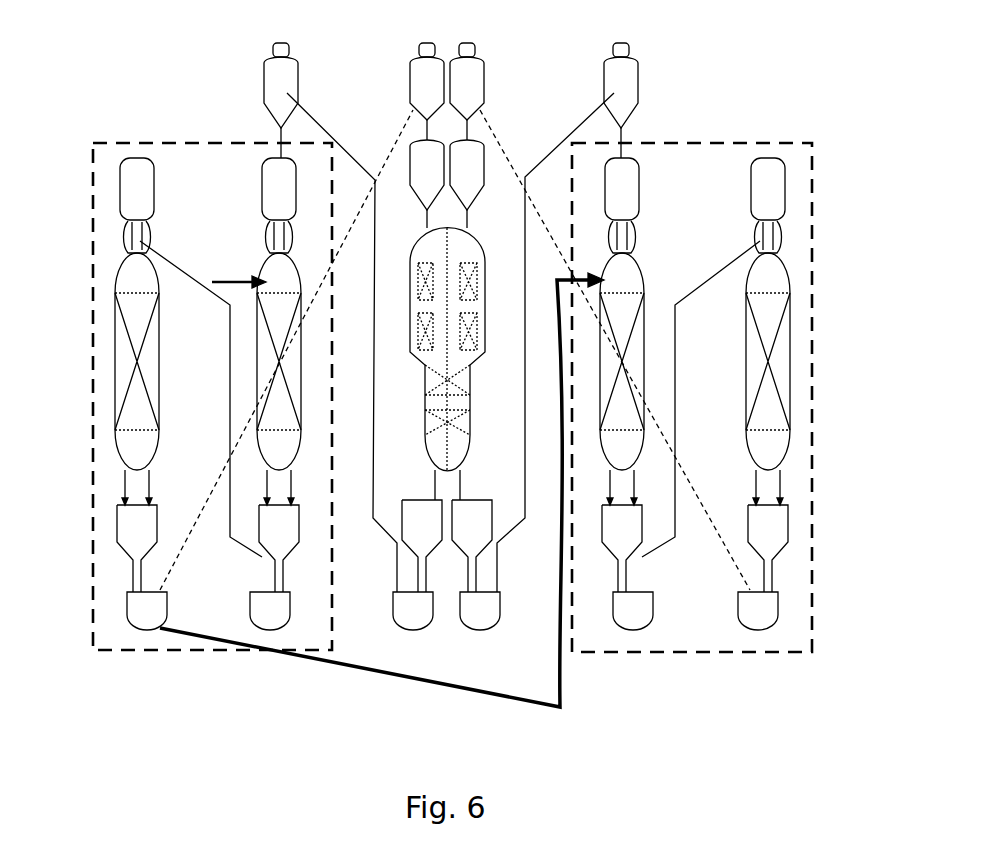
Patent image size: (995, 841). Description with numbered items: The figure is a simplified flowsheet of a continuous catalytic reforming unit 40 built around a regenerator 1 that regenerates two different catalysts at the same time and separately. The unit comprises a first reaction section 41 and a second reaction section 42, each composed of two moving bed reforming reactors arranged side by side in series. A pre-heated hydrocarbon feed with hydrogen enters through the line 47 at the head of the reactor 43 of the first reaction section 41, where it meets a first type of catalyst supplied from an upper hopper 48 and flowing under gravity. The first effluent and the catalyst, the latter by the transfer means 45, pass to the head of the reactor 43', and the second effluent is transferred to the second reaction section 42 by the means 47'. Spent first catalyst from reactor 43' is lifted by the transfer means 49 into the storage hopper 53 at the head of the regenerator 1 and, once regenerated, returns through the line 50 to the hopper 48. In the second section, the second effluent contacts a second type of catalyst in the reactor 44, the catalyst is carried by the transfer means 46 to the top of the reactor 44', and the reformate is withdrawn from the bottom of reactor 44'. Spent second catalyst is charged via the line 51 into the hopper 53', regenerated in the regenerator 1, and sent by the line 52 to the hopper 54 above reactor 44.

The regenerator 1 is at (476, 234).
The reforming unit 40 is at (693, 90).
The first reaction section 41 is at (205, 655).
The second reaction section 42 is at (672, 655).
The moving bed reforming reactor 43 is at (305, 394).
The moving bed reforming reactor 43' is at (97, 394).
The moving bed reforming reactor 44 is at (589, 394).
The moving bed reforming reactor 44' is at (804, 394).
The catalyst transfer means 45 is at (180, 267).
The catalyst transfer means 46 is at (680, 410).
The feed line 47 is at (239, 252).
The effluent transfer means 47' is at (382, 500).
The upper hopper 48 is at (264, 72).
The catalyst transfer means 49 is at (195, 527).
The return line 50 is at (372, 453).
The transfer line 51 is at (722, 548).
The return line 52 is at (525, 392).
The storage hopper 53 is at (399, 135).
The storage hopper 53' is at (498, 135).
The hopper 54 is at (610, 70).